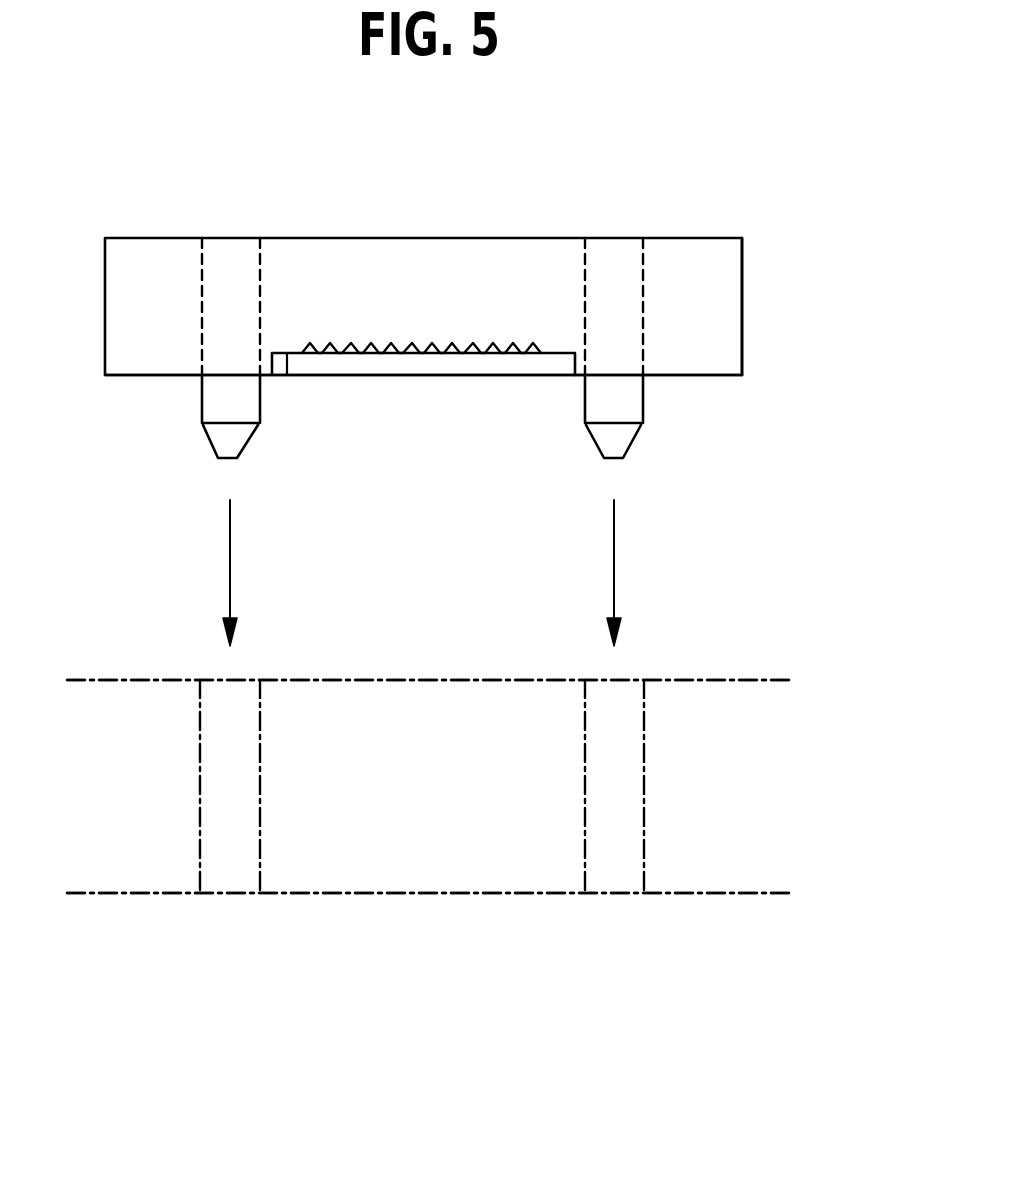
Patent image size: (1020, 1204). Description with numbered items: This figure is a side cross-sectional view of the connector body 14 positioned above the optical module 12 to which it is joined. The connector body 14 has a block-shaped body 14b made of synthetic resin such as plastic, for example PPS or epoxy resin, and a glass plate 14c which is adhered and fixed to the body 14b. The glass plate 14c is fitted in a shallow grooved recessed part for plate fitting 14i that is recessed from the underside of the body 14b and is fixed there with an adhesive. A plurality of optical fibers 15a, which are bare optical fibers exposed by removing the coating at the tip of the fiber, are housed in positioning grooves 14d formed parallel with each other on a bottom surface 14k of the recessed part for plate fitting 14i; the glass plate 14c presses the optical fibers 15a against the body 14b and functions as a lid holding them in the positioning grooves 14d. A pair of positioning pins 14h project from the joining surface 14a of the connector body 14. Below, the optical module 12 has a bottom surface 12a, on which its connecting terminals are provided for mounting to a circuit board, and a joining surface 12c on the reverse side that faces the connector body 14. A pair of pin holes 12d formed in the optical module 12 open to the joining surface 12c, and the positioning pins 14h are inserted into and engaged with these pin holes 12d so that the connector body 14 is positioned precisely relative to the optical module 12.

The connector body 14 is at (697, 239).
The joining surface 14a is at (697, 377).
The body 14b is at (743, 279).
The glass plate 14c is at (420, 362).
The positioning grooves 14d is at (447, 425).
The optical fibers 15a is at (526, 355).
The positioning pins 14h is at (388, 238).
The recessed part for plate fitting 14i is at (323, 419).
The bottom surface of the recessed part 14k is at (287, 375).
The optical module 12 is at (742, 680).
The bottom surface 12a is at (415, 895).
The joining surface 12c is at (410, 680).
The pin holes 12d is at (230, 882).